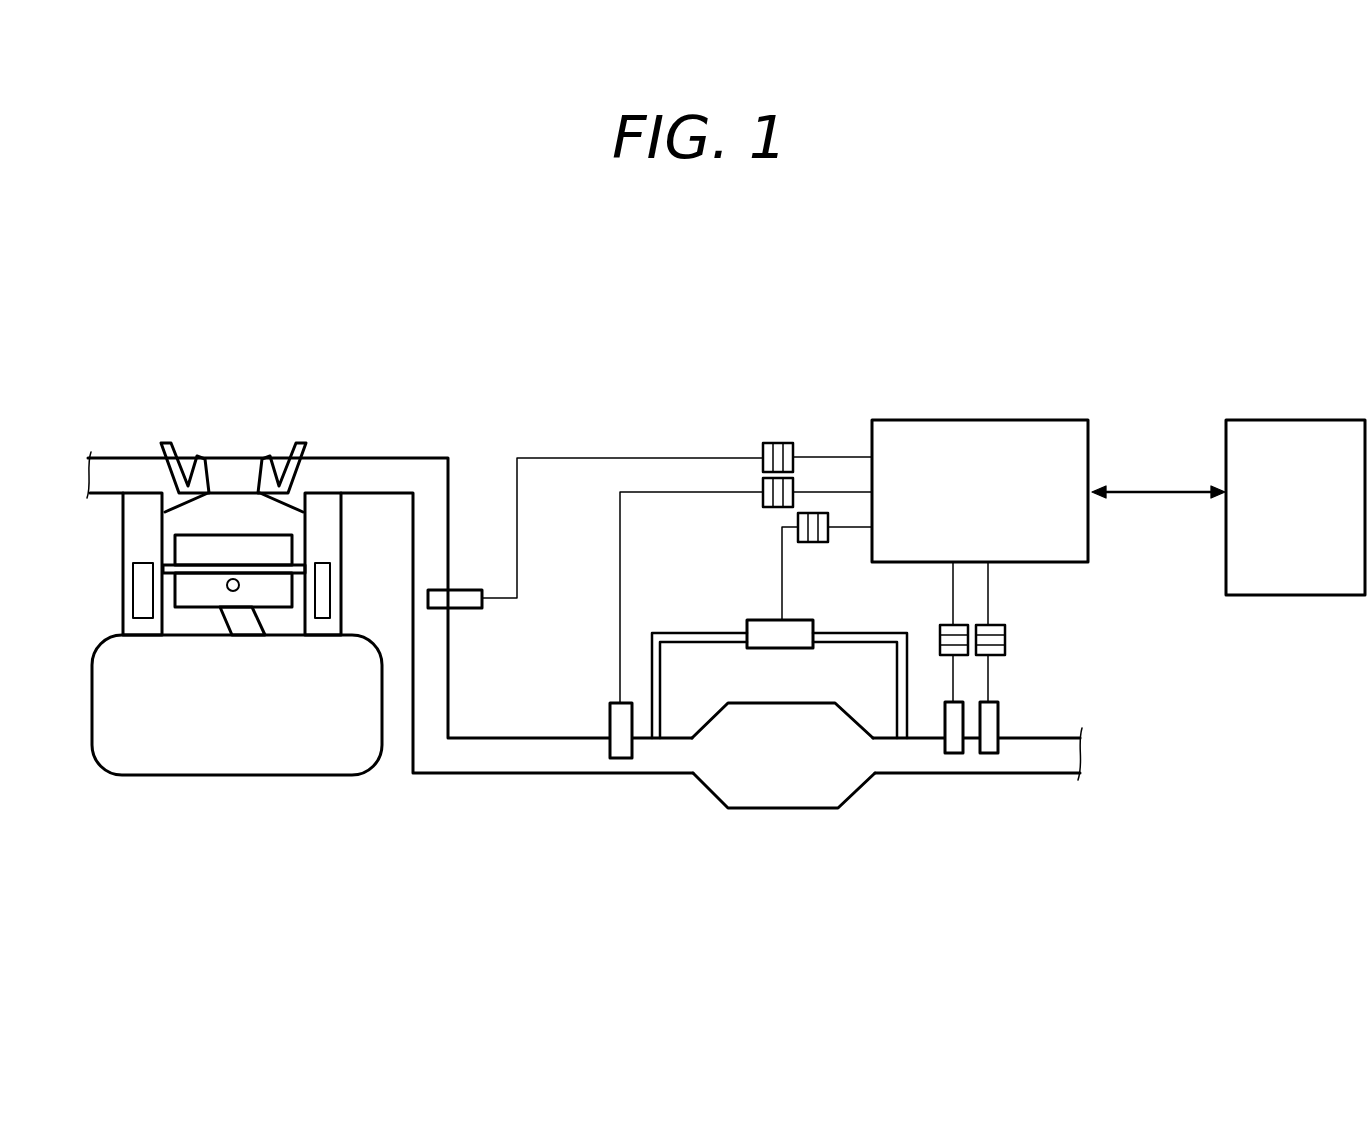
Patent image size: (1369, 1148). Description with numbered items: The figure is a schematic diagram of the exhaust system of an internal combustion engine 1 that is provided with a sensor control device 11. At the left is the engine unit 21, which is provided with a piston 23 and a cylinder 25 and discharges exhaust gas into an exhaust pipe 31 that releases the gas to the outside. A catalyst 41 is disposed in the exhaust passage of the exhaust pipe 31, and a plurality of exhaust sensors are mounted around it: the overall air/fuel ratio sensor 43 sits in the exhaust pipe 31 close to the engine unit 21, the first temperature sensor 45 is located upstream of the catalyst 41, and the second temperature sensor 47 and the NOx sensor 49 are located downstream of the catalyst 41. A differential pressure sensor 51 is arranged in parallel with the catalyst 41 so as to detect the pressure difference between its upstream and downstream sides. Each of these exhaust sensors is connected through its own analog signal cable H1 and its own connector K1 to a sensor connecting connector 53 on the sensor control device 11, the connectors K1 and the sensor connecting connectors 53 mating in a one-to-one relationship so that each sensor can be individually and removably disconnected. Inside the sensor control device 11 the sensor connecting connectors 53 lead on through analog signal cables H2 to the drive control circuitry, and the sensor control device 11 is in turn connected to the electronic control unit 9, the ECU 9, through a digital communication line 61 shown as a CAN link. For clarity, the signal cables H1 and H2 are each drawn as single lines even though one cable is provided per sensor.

The internal combustion engine 1 is at (741, 336).
The electronic control unit 9 is at (1313, 420).
The sensor control device 11 is at (1003, 435).
The engine unit 21 is at (243, 800).
The piston 23 is at (193, 600).
The cylinder 25 is at (132, 540).
The exhaust pipe 31 is at (492, 767).
The catalyst 41 is at (787, 800).
The overall air/fuel ratio sensor 43 is at (463, 603).
The first temperature sensor 45 is at (617, 725).
The second temperature sensor 47 is at (955, 753).
The NOx sensor 49 is at (992, 753).
The differential pressure sensor 51 is at (747, 630).
The sensor connecting connector 53 is at (782, 450).
The digital communication line 61 is at (1162, 490).
The signal cable H1 is at (545, 450).
The signal cable H2 is at (843, 455).
The connector K1 is at (763, 450).